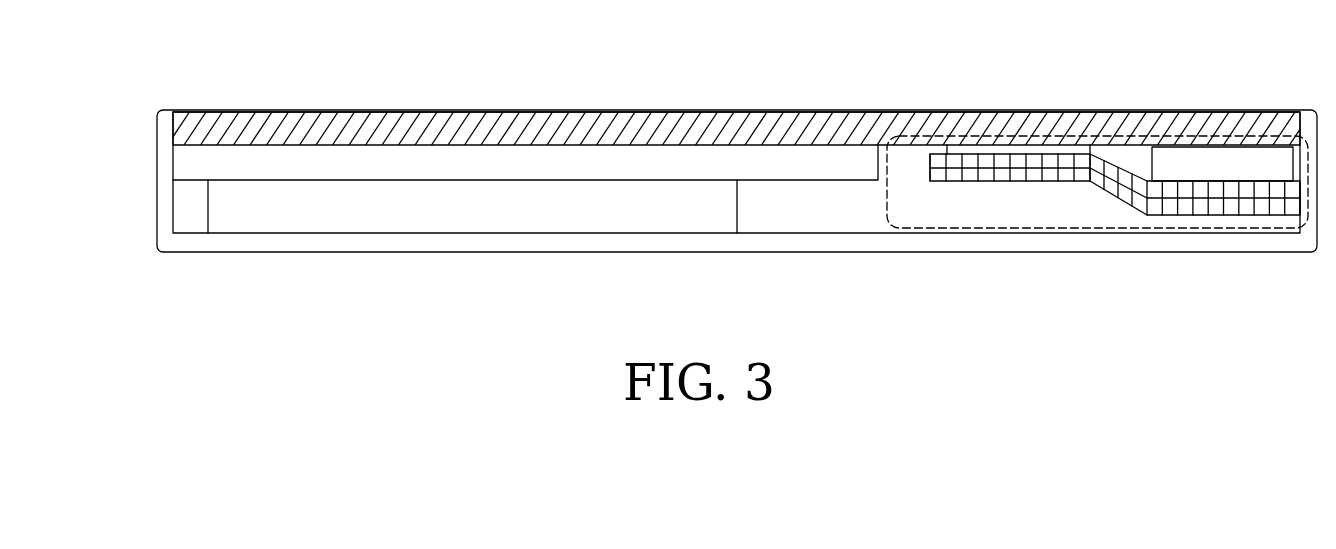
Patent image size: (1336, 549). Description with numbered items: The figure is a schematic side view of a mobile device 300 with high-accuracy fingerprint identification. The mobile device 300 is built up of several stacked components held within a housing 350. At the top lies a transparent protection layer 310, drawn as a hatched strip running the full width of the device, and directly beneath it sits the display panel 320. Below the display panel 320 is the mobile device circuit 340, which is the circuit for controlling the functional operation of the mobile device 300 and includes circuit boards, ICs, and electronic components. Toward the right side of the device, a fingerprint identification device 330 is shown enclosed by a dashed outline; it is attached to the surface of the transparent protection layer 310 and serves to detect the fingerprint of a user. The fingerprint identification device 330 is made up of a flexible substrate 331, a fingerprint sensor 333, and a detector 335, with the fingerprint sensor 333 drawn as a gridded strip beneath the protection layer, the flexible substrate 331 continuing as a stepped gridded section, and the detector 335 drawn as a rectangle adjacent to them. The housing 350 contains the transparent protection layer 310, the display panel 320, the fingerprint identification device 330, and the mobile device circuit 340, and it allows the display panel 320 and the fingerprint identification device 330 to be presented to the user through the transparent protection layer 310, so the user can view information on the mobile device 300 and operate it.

The mobile device 300 is at (358, 33).
The transparent protection layer 310 is at (200, 123).
The display panel 320 is at (198, 158).
The fingerprint identification device 330 is at (887, 207).
The flexible substrate 331 is at (1095, 183).
The fingerprint sensor 333 is at (1017, 153).
The detector 335 is at (1222, 165).
The mobile device circuit 340 is at (330, 213).
The housing 350 is at (770, 242).